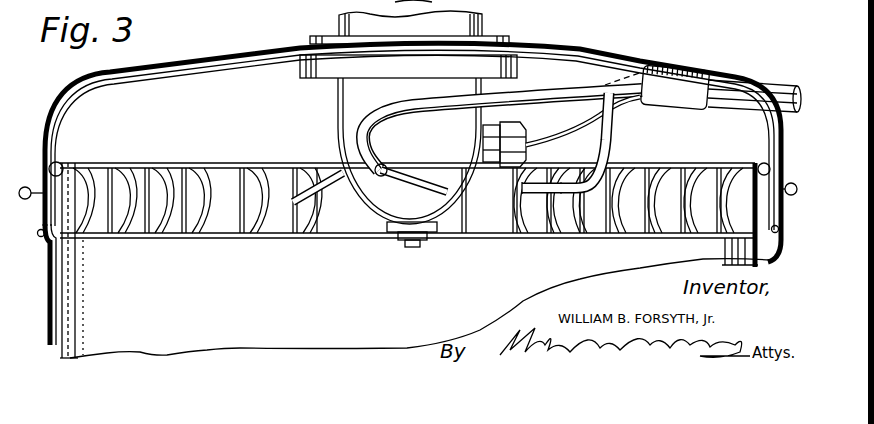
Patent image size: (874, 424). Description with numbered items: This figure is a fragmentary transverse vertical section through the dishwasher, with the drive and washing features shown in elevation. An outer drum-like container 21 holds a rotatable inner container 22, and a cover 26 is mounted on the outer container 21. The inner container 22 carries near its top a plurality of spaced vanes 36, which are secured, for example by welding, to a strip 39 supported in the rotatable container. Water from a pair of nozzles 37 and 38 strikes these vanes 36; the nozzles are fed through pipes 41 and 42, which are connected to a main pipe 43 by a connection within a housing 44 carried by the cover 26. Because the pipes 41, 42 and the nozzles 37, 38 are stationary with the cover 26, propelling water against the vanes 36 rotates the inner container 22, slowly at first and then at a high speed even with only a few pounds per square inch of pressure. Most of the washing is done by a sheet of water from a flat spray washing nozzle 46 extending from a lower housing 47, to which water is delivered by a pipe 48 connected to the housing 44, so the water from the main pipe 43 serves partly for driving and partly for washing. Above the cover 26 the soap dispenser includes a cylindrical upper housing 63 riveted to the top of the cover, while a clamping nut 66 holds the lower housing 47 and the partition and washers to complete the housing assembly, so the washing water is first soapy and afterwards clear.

The outer drum-like container 21 is at (49, 283).
The inner container 22 is at (64, 321).
The cover 26 is at (617, 58).
The vanes 36 is at (200, 165).
The nozzle 37 is at (439, 172).
The nozzle 38 is at (537, 200).
The strip 39 is at (238, 240).
The pipe 41 is at (613, 145).
The pipe 42 is at (531, 94).
The main pipe 43 is at (788, 66).
The housing 44 is at (684, 102).
The flat spray washing nozzle 46 is at (334, 192).
The housing 47 is at (336, 94).
The pipe 48 is at (572, 122).
The cylindrical housing 63 is at (482, 25).
The clamping nut 66 is at (397, 68).